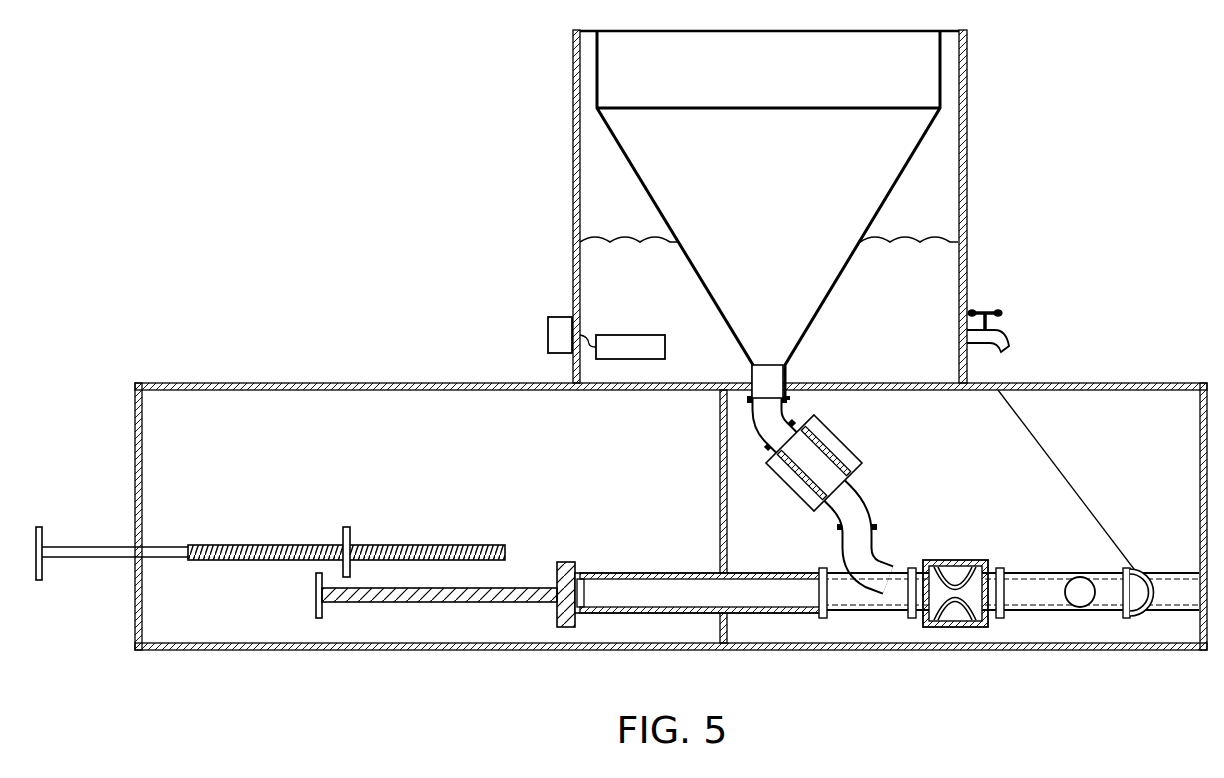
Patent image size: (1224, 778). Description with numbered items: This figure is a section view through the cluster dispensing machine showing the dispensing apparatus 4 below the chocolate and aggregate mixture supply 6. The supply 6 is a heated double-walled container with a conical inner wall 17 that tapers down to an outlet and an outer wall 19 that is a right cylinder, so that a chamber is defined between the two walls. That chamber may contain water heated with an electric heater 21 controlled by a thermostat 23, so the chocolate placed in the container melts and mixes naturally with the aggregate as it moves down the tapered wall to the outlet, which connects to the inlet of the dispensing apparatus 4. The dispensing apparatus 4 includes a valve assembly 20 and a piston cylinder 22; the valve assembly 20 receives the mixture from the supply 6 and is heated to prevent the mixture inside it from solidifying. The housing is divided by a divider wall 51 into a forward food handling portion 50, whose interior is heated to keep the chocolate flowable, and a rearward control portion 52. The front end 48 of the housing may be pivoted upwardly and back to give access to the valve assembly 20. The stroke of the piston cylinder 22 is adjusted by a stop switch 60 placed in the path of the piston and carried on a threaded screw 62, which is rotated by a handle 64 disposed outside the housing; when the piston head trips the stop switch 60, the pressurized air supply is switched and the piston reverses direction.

The dispensing apparatus 4 is at (601, 520).
The chocolate and aggregate mixture supply 6 is at (573, 156).
The conical inner wall 17 is at (868, 238).
The outer wall 19 is at (967, 206).
The valve assembly 20 is at (890, 566).
The electric heater 21 is at (625, 335).
The piston cylinder 22 is at (697, 613).
The thermostat 23 is at (548, 336).
The front end 48 is at (1150, 396).
The forward food handling portion 50 is at (1040, 628).
The divider wall 51 is at (727, 516).
The rearward control portion 52 is at (188, 418).
The stop switch 60 is at (346, 527).
The threaded screw 62 is at (257, 560).
The handle 64 is at (42, 570).